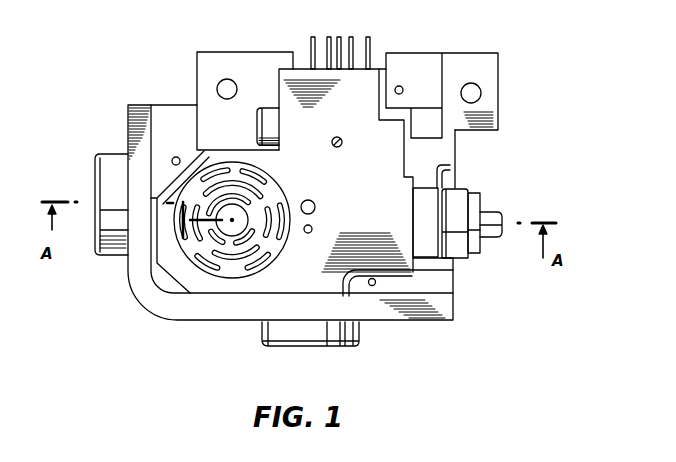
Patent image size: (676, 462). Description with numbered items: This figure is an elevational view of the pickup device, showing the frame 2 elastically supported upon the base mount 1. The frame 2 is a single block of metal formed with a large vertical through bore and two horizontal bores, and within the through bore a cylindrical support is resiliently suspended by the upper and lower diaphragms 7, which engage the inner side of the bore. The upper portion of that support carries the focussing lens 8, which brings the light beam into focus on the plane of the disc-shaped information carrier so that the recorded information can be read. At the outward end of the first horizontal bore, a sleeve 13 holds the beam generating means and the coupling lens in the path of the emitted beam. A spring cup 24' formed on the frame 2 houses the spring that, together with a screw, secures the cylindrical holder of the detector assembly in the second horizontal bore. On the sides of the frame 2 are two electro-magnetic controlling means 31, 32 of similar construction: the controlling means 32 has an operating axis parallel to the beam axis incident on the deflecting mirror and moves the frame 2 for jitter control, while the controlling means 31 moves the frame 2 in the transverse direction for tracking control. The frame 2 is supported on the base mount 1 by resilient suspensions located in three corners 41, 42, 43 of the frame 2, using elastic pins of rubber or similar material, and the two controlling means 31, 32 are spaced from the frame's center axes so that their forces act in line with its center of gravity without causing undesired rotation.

The base mount 1 is at (145, 290).
The frame 2 is at (210, 287).
The upper and lower diaphragms 7 is at (183, 239).
The focussing lens 8 is at (241, 227).
The sleeve 13 is at (458, 212).
The spring cup 24' is at (245, 101).
The electro-magnetic controlling means 31 is at (312, 336).
The electro-magnetic controlling means 32 is at (108, 175).
The resilient suspension corner 41 is at (174, 157).
The resilient suspension corner 42 is at (402, 87).
The resilient suspension corner 43 is at (376, 283).